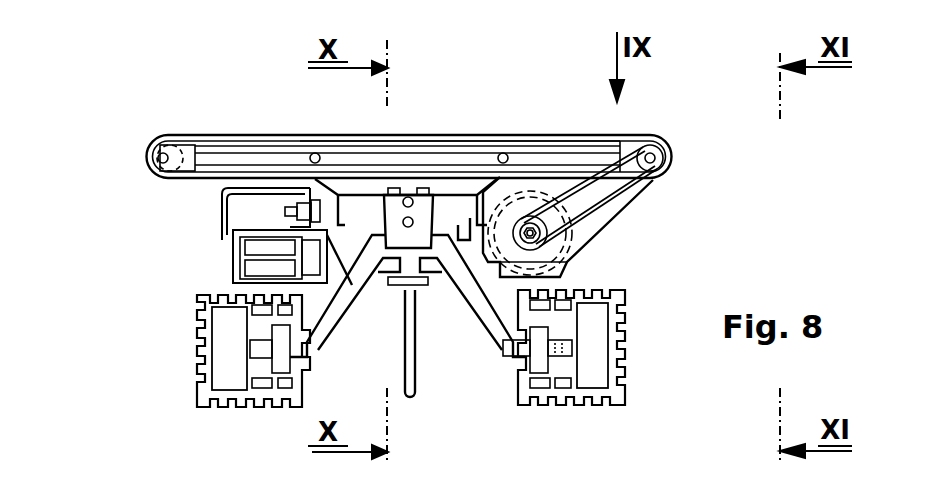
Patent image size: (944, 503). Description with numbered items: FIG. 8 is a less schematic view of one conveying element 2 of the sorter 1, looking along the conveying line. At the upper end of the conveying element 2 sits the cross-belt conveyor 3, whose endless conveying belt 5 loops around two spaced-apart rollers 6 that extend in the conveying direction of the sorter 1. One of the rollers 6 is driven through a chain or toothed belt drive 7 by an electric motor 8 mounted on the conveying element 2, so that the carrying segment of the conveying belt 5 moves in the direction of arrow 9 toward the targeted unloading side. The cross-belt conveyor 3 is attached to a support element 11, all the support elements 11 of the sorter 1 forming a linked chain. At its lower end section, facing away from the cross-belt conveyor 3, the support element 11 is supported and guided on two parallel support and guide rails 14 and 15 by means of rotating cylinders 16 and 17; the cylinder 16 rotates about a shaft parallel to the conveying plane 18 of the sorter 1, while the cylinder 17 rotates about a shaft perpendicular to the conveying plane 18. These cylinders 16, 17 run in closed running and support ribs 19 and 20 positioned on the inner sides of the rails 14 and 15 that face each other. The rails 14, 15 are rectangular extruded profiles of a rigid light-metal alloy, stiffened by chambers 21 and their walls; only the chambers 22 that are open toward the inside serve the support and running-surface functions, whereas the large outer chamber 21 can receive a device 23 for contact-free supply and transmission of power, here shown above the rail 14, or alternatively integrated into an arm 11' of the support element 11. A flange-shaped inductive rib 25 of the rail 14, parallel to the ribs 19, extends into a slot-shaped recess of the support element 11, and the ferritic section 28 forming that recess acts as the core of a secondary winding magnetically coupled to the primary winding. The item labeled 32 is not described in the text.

The sorter 1 is at (712, 112).
The conveying element 2 is at (630, 220).
The cross-belt conveyor 3 is at (628, 131).
The conveying belt 5 is at (190, 135).
The rollers 6 is at (147, 156).
The chain or toothed belt drive 7 is at (642, 172).
The electric motor 8 is at (560, 270).
The arrow 9 is at (272, 117).
The support element 11 is at (407, 288).
The arm of the support element 11' is at (371, 342).
The support and guide rail 14 is at (188, 378).
The support and guide rail 15 is at (636, 378).
The cylinder 16 is at (540, 382).
The cylinder 17 is at (572, 350).
The conveying plane 18 is at (507, 137).
The running and support rib 19 is at (262, 382).
The running and support rib 20 is at (247, 331).
The chambers 21 is at (253, 313).
The chambers 22 is at (505, 362).
The device for contact-free supply and transmission of power 23 is at (210, 252).
The inductive rib 25 is at (283, 257).
The section of the support element 28 is at (275, 246).
The rail section 32 is at (430, 135).